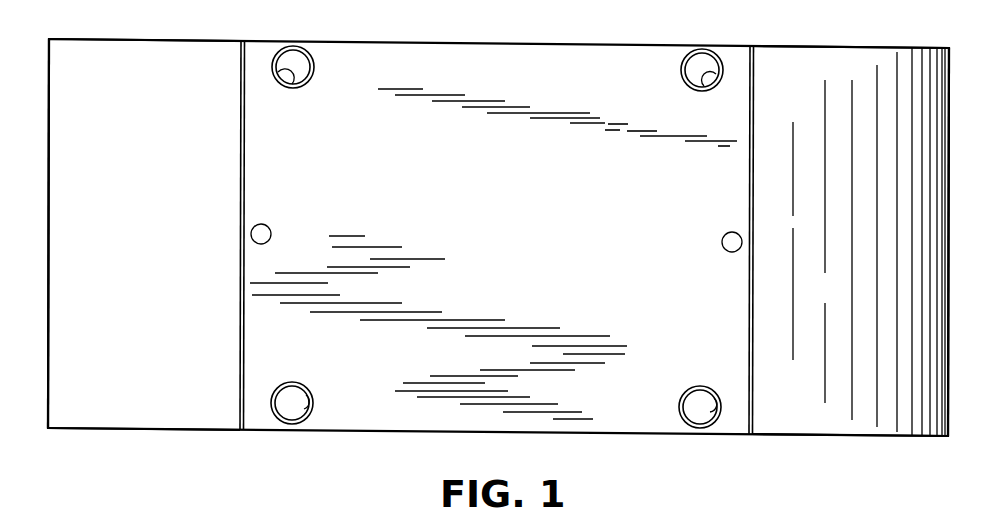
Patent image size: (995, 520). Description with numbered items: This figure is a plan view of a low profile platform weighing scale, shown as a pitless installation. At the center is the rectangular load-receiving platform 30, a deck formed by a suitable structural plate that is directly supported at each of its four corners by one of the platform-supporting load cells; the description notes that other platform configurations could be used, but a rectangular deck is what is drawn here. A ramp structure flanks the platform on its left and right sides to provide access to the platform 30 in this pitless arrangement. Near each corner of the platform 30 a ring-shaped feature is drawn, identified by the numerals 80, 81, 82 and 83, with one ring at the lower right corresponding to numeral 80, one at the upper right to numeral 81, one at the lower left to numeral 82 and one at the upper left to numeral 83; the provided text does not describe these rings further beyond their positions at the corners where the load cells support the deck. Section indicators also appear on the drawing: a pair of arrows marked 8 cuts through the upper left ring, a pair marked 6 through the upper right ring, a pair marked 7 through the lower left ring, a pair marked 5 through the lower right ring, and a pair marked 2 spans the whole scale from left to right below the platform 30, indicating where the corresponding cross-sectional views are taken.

The load-receiving platform 30 is at (508, 218).
The mounting ring 80 is at (688, 384).
The mounting ring 81 is at (688, 83).
The mounting ring 82 is at (298, 380).
The mounting ring 83 is at (308, 82).
The section line 2- 2 is at (83, 473).
The section line 5- 5 is at (778, 407).
The section line 6- 6 is at (778, 70).
The section line 7- 7 is at (348, 403).
The section line 8- 8 is at (272, 66).